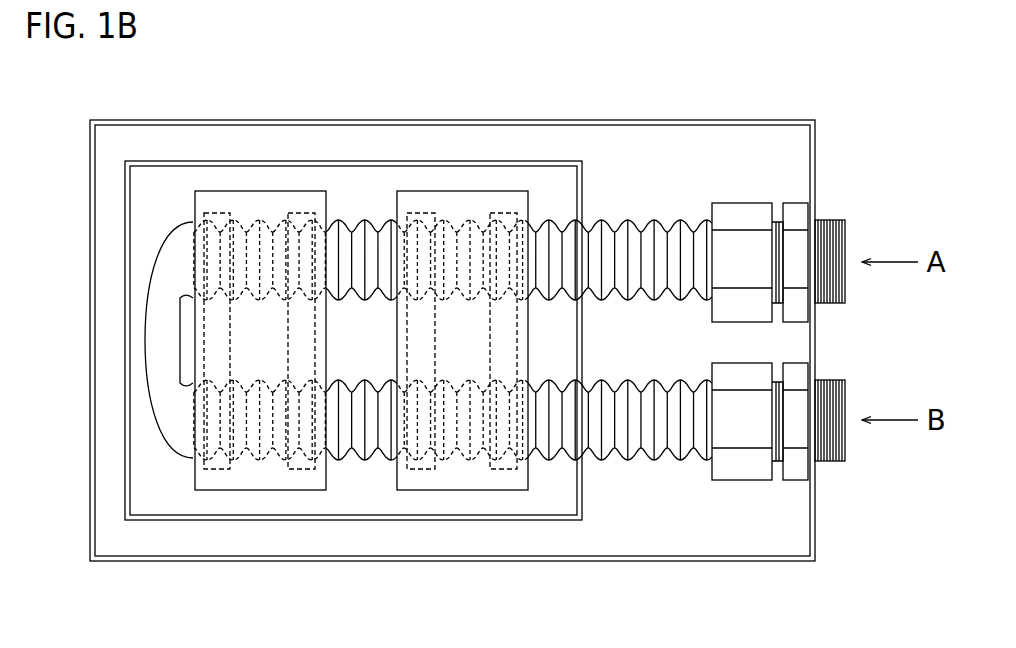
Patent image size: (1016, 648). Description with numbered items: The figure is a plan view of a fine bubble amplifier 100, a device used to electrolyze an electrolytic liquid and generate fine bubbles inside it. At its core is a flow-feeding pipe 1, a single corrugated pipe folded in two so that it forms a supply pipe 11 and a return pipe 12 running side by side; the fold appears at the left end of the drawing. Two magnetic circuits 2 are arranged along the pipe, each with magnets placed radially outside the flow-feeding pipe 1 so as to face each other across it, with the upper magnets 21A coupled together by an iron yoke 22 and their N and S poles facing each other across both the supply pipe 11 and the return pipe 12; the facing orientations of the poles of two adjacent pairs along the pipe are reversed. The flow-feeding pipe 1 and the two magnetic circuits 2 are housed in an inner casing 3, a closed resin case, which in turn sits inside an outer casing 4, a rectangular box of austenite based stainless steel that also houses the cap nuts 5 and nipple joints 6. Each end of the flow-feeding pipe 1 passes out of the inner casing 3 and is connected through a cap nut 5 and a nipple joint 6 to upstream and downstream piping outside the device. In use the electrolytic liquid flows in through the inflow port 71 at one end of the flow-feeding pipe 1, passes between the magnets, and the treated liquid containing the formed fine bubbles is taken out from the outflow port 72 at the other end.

The fine bubble amplifier 100 is at (847, 109).
The flow-feeding pipe 1 is at (190, 218).
The magnetic circuit 2 is at (245, 188).
The inner casing 3 is at (293, 160).
The outer casing 4 is at (328, 120).
The cap nut 5 is at (731, 203).
The nipple joint 6 is at (784, 203).
The supply pipe 11 is at (357, 218).
The return pipe 12 is at (358, 460).
The magnet 21A is at (215, 325).
The yoke 22 is at (244, 490).
The inflow port 71 is at (852, 285).
The outflow port 72 is at (852, 445).